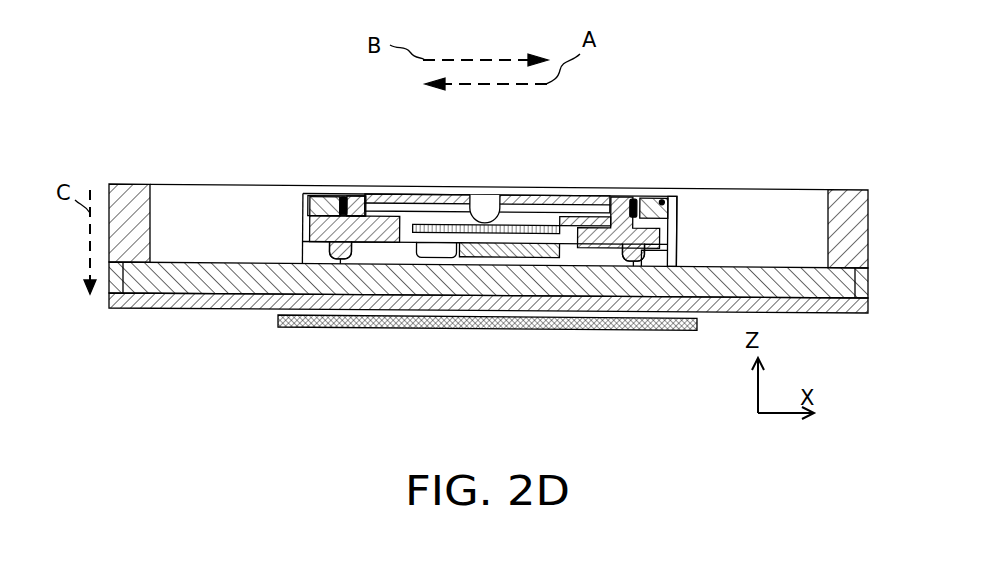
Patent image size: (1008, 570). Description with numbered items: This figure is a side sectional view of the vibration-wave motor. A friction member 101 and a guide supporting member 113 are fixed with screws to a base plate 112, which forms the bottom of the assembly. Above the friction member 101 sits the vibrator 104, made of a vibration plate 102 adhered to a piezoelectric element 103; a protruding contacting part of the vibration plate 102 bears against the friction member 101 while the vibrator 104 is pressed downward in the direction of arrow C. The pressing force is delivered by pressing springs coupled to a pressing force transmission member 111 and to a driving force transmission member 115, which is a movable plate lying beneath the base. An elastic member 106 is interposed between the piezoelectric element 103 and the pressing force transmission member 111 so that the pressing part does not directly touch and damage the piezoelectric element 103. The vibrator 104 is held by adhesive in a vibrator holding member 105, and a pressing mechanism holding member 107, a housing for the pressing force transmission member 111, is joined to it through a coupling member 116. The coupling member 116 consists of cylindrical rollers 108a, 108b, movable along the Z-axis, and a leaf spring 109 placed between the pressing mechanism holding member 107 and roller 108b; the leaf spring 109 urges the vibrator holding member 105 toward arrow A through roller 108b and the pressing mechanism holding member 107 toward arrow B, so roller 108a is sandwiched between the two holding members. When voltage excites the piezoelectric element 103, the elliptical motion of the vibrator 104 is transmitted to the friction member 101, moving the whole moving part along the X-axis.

The friction member 101 is at (189, 290).
The vibration plate 102 is at (438, 247).
The piezoelectric element 103 is at (489, 243).
The vibrator 104 is at (405, 356).
The vibrator holding member 105 is at (305, 225).
The elastic member 106 is at (460, 226).
The pressing mechanism holding member 107 is at (323, 198).
The roller 108a is at (344, 197).
The roller 108b is at (632, 200).
The leaf spring 109 is at (646, 200).
The pressing force transmission member 111 is at (386, 198).
The base plate 112 is at (125, 196).
The guide supporting member 113 is at (244, 306).
The driving force transmission member 115 is at (307, 328).
The coupling member 116 is at (352, 117).